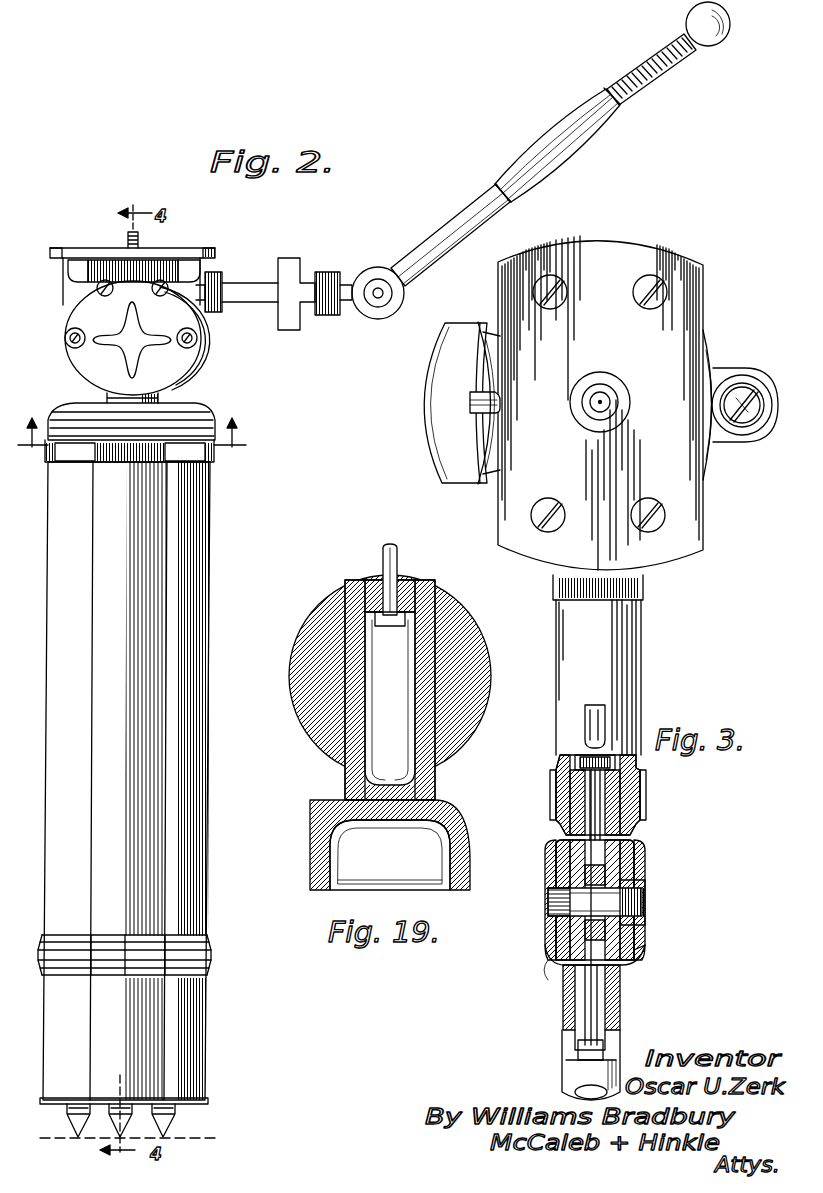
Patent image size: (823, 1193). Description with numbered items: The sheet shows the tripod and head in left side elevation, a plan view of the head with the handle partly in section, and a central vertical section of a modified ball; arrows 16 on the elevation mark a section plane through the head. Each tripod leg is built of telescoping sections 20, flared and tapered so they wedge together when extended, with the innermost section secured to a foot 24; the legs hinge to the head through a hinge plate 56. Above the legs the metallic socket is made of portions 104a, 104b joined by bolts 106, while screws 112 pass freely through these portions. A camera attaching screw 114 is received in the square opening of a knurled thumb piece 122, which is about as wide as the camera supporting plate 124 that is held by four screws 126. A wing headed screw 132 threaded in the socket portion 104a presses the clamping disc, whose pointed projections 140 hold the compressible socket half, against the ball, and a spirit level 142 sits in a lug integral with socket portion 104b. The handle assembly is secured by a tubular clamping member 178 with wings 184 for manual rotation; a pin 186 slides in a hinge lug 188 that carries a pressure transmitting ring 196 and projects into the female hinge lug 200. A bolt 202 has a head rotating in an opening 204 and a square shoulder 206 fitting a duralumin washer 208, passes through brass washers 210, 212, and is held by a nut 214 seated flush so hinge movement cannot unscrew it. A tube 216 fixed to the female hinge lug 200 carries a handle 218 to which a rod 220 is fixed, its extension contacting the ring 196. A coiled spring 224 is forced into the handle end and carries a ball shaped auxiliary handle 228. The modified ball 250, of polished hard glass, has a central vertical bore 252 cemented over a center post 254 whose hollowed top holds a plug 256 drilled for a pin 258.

In FIG. 2, the section line 16- 16 is at (129, 443).
In FIG. 2, the telescoping sections 20 is at (105, 905).
In FIG. 2, the foot 24 is at (75, 1124).
In FIG. 2, the hinge plate 56 is at (195, 412).
In FIG. 2, the socket portion 104a is at (165, 355).
In FIG. 3, the socket portion 104a is at (483, 485).
In FIG. 3, the socket portion 104b is at (710, 358).
In FIG. 2, the bolts 106 is at (65, 338).
In FIG. 2, the screws 112 is at (158, 292).
In FIG. 3, the camera attaching screw 114 is at (607, 412).
In FIG. 2, the knurled thumb piece 122 is at (88, 270).
In FIG. 2, the camera supporting plate 124 is at (82, 252).
In FIG. 3, the camera supporting plate 124 is at (678, 562).
In FIG. 3, the screws 126 is at (660, 296).
In FIG. 2, the wing headed screw 132 is at (118, 350).
In FIG. 3, the wing headed screw 132 is at (435, 373).
In FIG. 3, the pointed projections 140 is at (738, 390).
In FIG. 3, the spirit level 142 is at (758, 436).
In FIG. 3, the tubular clamping member 178 is at (622, 690).
In FIG. 2, the wings 184 is at (288, 258).
In FIG. 3, the pin 186 is at (600, 812).
In FIG. 3, the hinge lug 188 is at (620, 840).
In FIG. 3, the pressure transmitting ring 196 is at (575, 875).
In FIG. 2, the female hinge lug 200 is at (372, 318).
In FIG. 3, the female hinge lug 200 is at (552, 960).
In FIG. 3, the bolt 202 is at (604, 898).
In FIG. 3, the opening 204 is at (646, 886).
In FIG. 3, the square shoulder 206 is at (645, 922).
In FIG. 3, the duralumin washer 208 is at (640, 958).
In FIG. 3, the brass washer 210 is at (646, 858).
In FIG. 3, the brass washer 212 is at (552, 846).
In FIG. 2, the nut 214 is at (390, 295).
In FIG. 3, the nut 214 is at (548, 925).
In FIG. 2, the tube 216 is at (448, 232).
In FIG. 3, the tube 216 is at (563, 1010).
In FIG. 2, the handle 218 is at (548, 138).
In FIG. 3, the rod 220 is at (578, 1050).
In FIG. 2, the coiled spring 224 is at (630, 78).
In FIG. 2, the ball shaped auxiliary handle 228 is at (688, 27).
In FIG. 19, the ball 250 is at (480, 694).
In FIG. 19, the central vertical bore 252 is at (432, 650).
In FIG. 19, the center post 254 is at (350, 796).
In FIG. 19, the plug 256 is at (355, 584).
In FIG. 19, the pin 258 is at (382, 566).